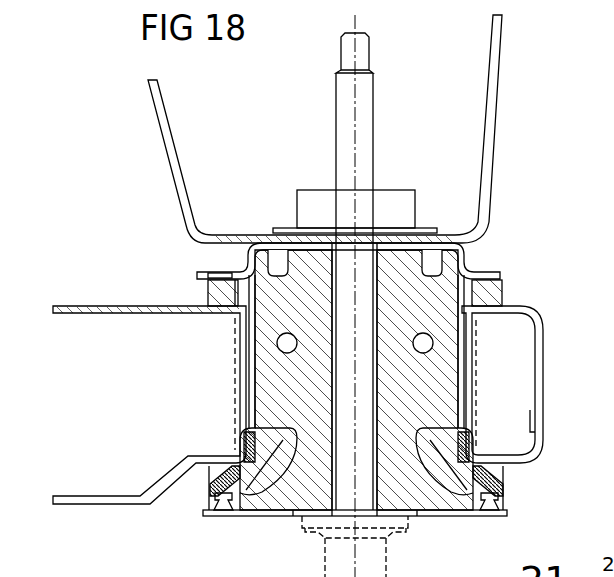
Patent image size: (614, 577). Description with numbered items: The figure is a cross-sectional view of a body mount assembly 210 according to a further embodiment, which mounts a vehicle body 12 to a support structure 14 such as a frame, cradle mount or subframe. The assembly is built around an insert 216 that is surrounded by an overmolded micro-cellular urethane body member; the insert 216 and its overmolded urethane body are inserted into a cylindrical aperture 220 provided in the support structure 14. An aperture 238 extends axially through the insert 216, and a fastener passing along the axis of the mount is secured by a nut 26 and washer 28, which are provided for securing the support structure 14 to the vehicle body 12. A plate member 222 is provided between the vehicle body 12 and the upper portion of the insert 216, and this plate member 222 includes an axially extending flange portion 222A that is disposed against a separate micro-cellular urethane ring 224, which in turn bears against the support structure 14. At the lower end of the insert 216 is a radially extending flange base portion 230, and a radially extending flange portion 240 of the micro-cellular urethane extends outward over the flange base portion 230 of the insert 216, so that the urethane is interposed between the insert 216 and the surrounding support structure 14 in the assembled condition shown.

The vehicle body 12 is at (493, 118).
The support structure 14 is at (540, 362).
The nut 26 is at (308, 198).
The washer 28 is at (418, 230).
The body mount assembly 210 is at (499, 263).
The insert 216 is at (240, 358).
The cylindrical aperture 220 is at (467, 378).
The plate member 222 is at (258, 243).
The axially extending flange portion 222A is at (197, 274).
The micro-cellular urethane ring 224 is at (495, 297).
The flange base portion 230 is at (492, 503).
The aperture 238 is at (378, 262).
The radially extending flange portion 240 is at (213, 476).